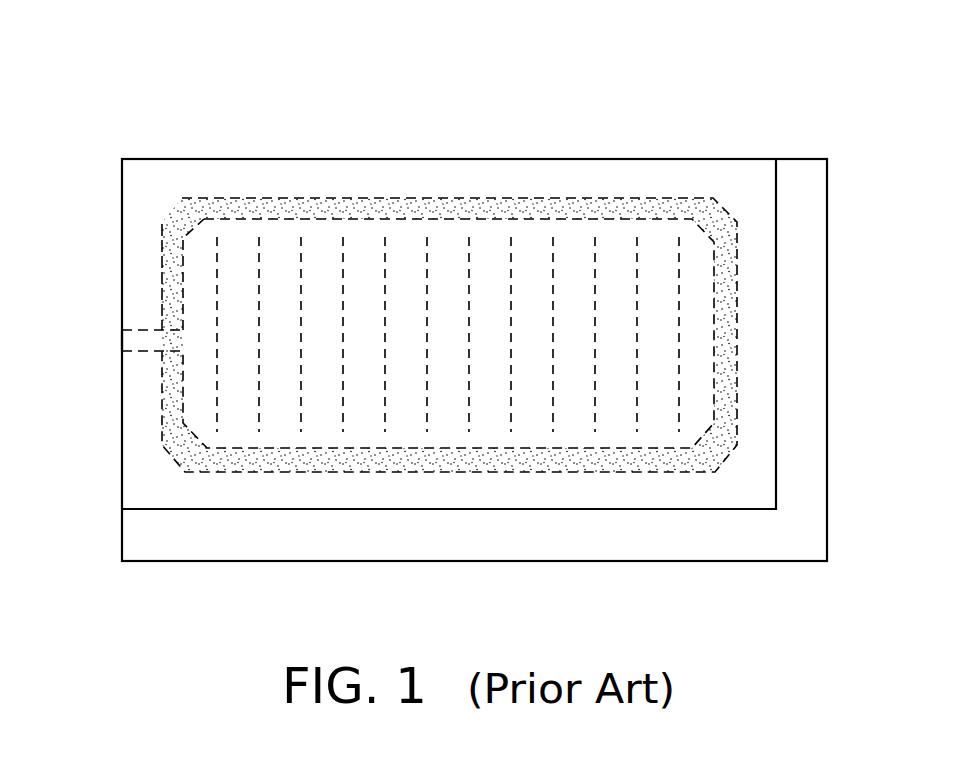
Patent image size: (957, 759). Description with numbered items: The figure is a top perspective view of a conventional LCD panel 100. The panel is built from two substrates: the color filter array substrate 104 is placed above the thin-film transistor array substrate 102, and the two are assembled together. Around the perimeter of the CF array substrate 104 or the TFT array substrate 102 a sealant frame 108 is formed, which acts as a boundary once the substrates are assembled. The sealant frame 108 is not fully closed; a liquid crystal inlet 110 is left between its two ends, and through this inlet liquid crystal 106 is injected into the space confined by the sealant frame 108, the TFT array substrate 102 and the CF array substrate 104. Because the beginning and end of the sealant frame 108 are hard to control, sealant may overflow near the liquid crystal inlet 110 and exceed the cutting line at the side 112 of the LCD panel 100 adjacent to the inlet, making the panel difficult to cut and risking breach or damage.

The LCD panel 100 is at (780, 110).
The thin-film transistor (TFT) array substrate 102 is at (753, 537).
The color filter (CF) array substrate 104 is at (753, 483).
The liquid crystal 106 is at (448, 265).
The sealant frame 108 is at (737, 227).
The liquid crystal inlet 110 is at (140, 343).
The side 112 is at (122, 406).